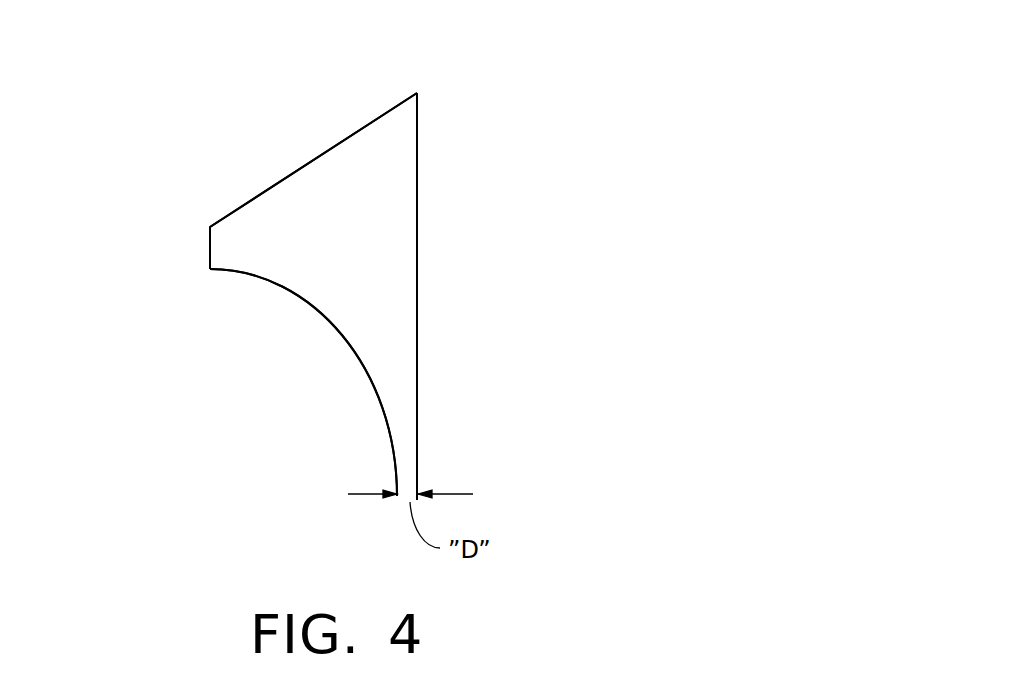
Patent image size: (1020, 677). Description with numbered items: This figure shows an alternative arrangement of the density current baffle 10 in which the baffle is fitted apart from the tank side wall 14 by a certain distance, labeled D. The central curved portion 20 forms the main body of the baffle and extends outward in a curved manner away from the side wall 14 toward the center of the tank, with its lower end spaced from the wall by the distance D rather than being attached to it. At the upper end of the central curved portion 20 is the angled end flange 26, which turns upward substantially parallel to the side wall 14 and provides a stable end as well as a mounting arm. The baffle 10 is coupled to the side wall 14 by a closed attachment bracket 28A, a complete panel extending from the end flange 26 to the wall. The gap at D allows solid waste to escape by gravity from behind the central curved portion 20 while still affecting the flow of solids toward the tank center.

The density current baffle 10 is at (483, 83).
The side wall 14 is at (418, 250).
The central curved portion 20 is at (333, 340).
The angled end flange 26 is at (210, 246).
The closed attachment bracket 28A is at (300, 168).